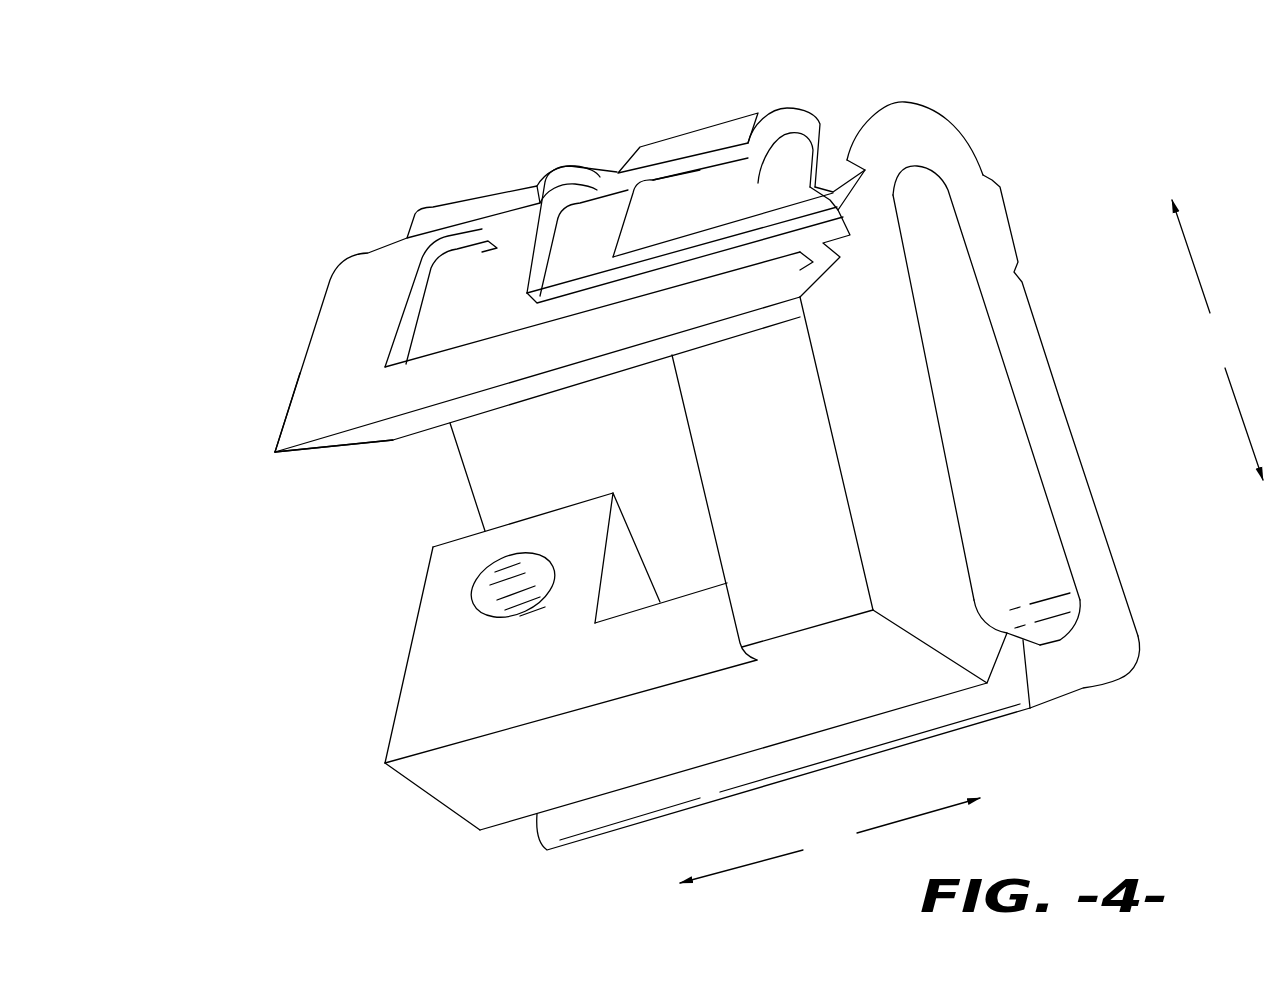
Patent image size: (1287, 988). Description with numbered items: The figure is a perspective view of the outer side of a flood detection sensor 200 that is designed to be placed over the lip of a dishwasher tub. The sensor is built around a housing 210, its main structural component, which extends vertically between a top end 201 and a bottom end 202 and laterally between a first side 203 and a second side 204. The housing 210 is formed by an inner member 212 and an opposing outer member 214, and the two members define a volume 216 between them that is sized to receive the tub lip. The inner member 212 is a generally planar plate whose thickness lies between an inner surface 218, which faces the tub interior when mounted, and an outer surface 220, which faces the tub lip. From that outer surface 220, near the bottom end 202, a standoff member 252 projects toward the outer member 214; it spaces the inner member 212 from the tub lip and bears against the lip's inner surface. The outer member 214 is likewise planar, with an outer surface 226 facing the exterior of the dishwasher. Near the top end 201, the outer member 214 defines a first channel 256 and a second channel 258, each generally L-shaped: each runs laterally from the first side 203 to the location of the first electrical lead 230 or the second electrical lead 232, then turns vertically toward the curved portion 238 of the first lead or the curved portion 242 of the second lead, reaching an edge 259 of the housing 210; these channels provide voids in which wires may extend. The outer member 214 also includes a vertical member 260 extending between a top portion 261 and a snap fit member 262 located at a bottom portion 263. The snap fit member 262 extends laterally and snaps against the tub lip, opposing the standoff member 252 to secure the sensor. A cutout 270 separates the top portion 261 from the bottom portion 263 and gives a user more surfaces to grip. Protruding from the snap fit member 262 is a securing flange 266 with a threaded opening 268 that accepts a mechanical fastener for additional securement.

The flood detection sensor 200 is at (184, 197).
The top end 201 is at (968, 117).
The bottom end 202 is at (1157, 640).
The first side 203 is at (915, 93).
The second side 204 is at (353, 248).
The housing 210 is at (980, 210).
The inner member 212 is at (1063, 333).
The outer member 214 is at (273, 340).
The volume 216 is at (653, 490).
The inner surface 218 is at (1083, 455).
The outer surface 220 is at (1033, 467).
The outer surface 226 is at (327, 410).
The first electrical lead 230 is at (727, 121).
The second electrical lead 232 is at (517, 187).
The curved portion 238 is at (655, 133).
The curved portion 242 is at (443, 199).
The standoff member 252 is at (1088, 690).
The first channel 256 is at (815, 160).
The second channel 258 is at (457, 332).
The edge 259 is at (818, 262).
The vertical member 260 is at (772, 478).
The top portion 261 is at (275, 470).
The snap fit member 262 is at (712, 720).
The bottom portion 263 is at (410, 813).
The securing flange 266 is at (450, 562).
The threaded opening 268 is at (492, 598).
The cutout 270 is at (685, 563).